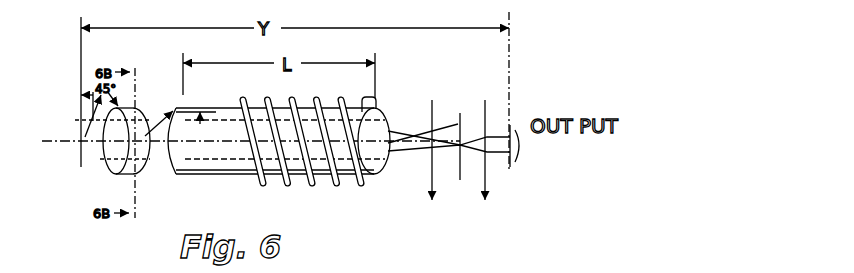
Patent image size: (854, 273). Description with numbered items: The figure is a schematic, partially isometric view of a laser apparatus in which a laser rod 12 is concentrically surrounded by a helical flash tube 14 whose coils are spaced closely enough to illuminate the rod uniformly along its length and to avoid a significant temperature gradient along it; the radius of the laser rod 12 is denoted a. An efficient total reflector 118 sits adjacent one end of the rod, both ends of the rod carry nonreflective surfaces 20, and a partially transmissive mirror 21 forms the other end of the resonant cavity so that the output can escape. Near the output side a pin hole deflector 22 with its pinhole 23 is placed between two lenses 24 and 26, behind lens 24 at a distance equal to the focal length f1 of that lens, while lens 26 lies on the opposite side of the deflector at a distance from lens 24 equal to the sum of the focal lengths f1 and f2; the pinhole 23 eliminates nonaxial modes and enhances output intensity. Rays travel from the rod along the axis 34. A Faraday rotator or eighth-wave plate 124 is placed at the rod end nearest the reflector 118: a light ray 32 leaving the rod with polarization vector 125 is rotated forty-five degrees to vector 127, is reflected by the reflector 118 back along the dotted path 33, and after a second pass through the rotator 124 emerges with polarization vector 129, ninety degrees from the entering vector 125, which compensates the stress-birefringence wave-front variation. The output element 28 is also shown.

The laser rod 12 is at (384, 114).
The helical flash tube 14 is at (246, 100).
The nonreflective surfaces 20 is at (171, 178).
The mirror 21 is at (514, 127).
The pin hole deflector 22 is at (460, 119).
The pinhole 23 is at (471, 129).
The lens 24 is at (433, 100).
The lens 26 is at (486, 99).
The output detector 28 is at (530, 143).
The light ray 32 is at (217, 120).
The reflected light path 33 is at (196, 127).
The axis 34 is at (292, 148).
The radius of the laser rod a is at (335, 144).
The focal length f1 is at (432, 173).
The focal length f2 is at (460, 173).
The reflector 118 is at (77, 172).
The Faraday rotator 124 is at (141, 126).
The electric vector 125 is at (208, 112).
The vector 127 is at (95, 120).
The vector 129 is at (160, 135).